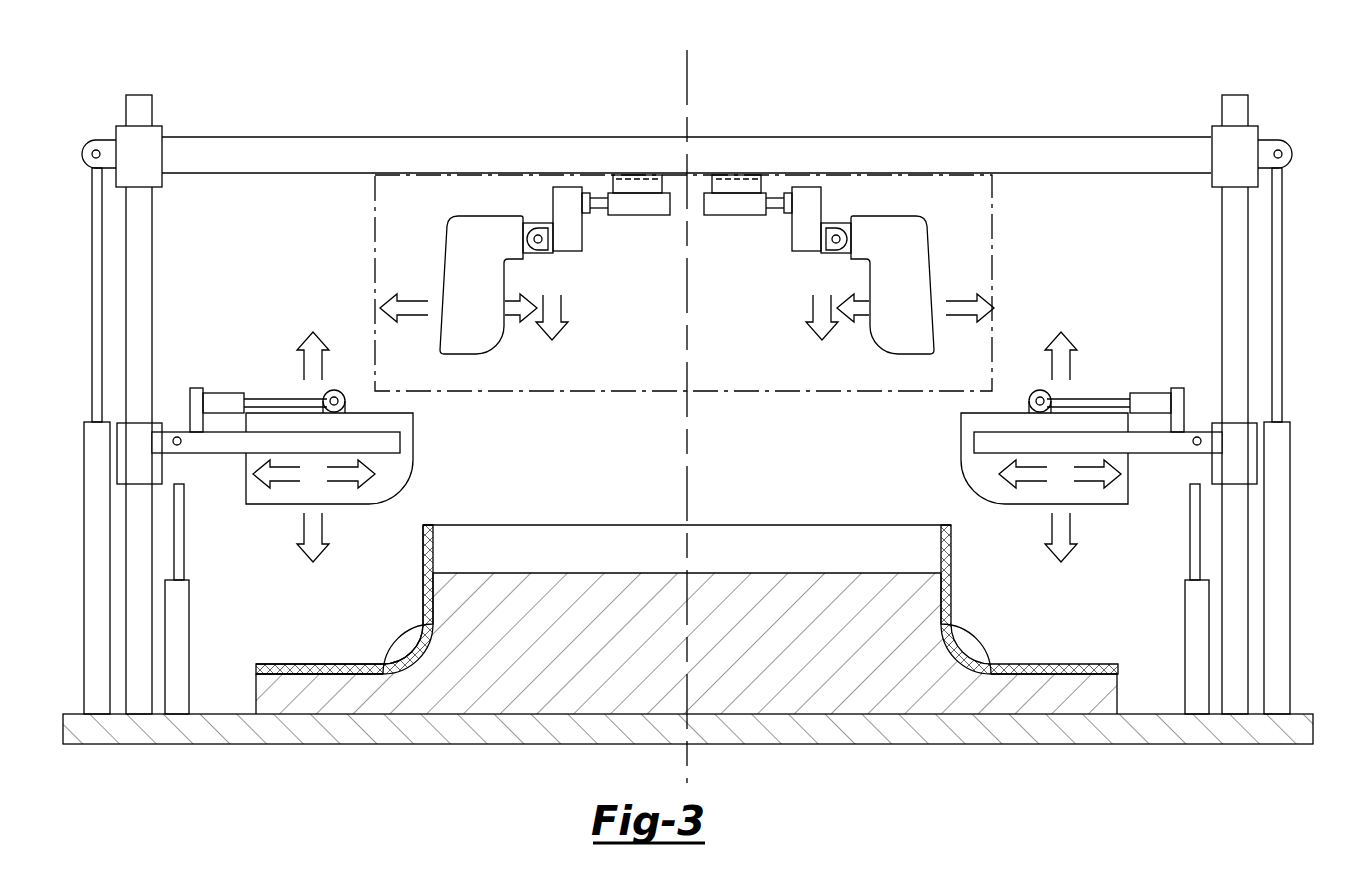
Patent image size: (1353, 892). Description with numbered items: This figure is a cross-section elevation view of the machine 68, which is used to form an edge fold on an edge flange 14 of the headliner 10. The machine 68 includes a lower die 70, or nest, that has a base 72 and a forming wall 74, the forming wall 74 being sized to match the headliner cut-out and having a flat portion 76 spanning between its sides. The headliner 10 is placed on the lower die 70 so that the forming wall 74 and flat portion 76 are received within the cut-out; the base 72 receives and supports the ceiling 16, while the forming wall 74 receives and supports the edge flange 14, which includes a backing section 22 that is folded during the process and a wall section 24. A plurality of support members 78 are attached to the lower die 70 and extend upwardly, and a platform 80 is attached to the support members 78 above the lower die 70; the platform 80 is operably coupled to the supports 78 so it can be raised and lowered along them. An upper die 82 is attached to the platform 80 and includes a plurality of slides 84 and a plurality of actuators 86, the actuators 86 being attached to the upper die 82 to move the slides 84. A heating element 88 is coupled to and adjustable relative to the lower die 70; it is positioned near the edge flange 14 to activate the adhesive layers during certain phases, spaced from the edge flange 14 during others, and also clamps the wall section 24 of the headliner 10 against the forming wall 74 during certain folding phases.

The headliner 10 is at (592, 525).
The edge flange 14 is at (423, 562).
The ceiling 16 is at (341, 664).
The backing section 22 is at (423, 533).
The wall section 24 is at (420, 602).
The machine 68 is at (687, 377).
The lower die 70 is at (793, 698).
The base 72 is at (316, 674).
The forming wall 74 is at (433, 602).
The flat portion 76 is at (892, 296).
The support members 78 is at (144, 290).
The platform 80 is at (570, 137).
The upper die 82 is at (992, 282).
The slides 84 is at (462, 294).
The actuators 86 is at (636, 205).
The heating element 88 is at (413, 453).